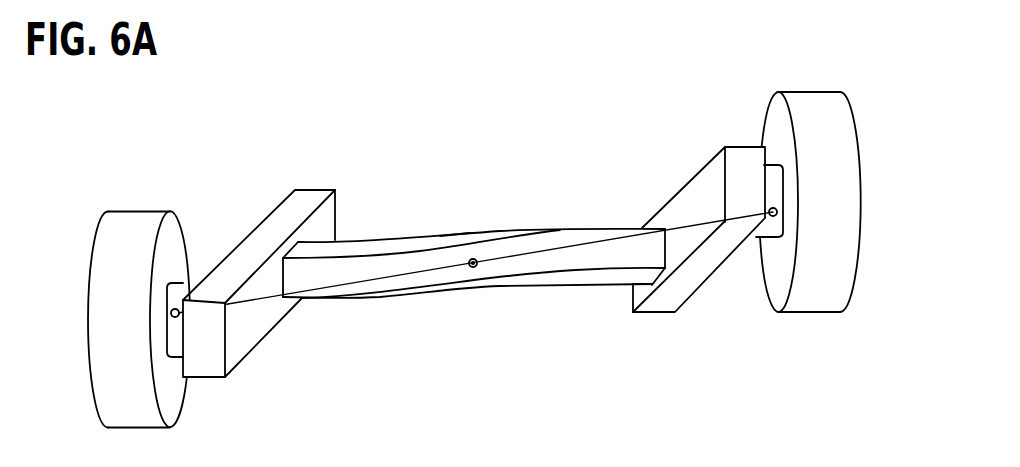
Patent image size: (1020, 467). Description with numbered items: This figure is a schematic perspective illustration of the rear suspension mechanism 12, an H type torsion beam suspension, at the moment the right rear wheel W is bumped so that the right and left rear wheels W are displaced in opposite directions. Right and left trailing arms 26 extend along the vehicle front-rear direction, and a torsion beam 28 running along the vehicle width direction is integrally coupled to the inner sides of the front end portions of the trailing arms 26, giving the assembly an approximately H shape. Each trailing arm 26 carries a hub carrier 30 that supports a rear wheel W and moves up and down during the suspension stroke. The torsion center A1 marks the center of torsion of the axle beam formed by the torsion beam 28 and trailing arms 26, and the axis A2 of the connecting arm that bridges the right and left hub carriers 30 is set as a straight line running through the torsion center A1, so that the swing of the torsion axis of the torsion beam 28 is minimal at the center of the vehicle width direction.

The rear wheel W is at (143, 209).
The hub carrier 30 is at (176, 337).
The trailing arm 26 is at (258, 243).
The rear suspension mechanism 12 is at (513, 220).
The torsion beam 28 is at (463, 233).
The torsion center A1 is at (476, 270).
The axis of the connecting arm A2 is at (258, 300).